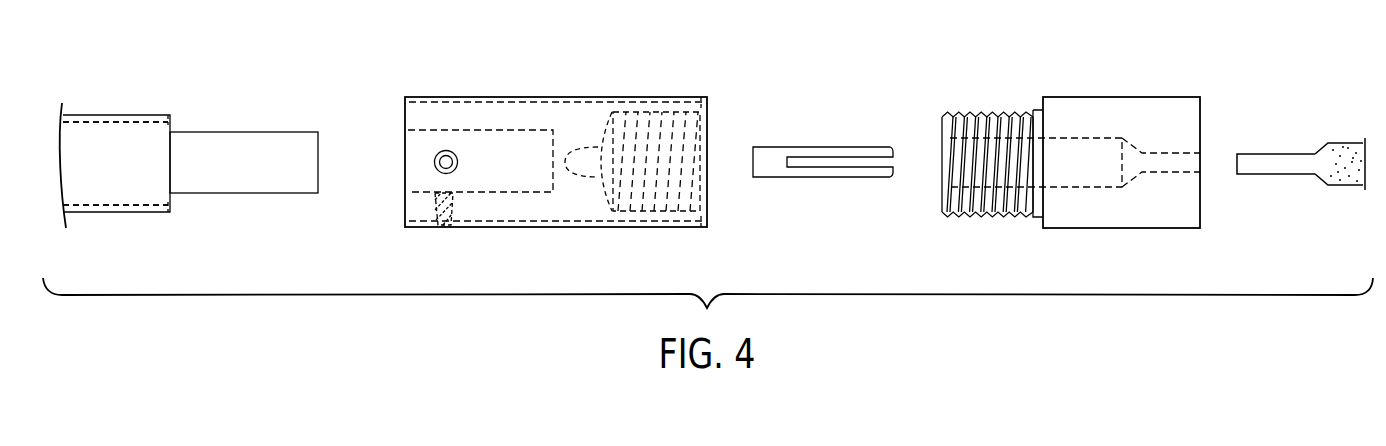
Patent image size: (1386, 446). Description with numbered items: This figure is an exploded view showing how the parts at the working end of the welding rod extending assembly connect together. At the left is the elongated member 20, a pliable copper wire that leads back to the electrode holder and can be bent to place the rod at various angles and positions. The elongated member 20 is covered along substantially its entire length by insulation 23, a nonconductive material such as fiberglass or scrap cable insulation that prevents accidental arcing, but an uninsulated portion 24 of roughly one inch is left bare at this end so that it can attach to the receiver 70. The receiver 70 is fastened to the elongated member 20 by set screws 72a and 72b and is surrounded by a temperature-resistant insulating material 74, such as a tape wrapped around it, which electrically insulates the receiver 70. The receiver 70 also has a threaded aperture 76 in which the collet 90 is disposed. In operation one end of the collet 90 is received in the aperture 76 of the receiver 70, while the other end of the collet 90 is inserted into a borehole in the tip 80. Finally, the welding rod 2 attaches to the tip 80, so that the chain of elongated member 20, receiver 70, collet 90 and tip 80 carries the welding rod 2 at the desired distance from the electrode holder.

The elongated member 20 is at (157, 98).
The insulation 23 is at (128, 207).
The uninsulated portion 24 is at (230, 195).
The receiver 70 is at (526, 146).
The set screw 72a is at (434, 162).
The set screw 72b is at (443, 228).
The insulating material 74 is at (603, 102).
The threaded aperture 76 is at (670, 113).
The tip 80 is at (1113, 90).
The collet 90 is at (835, 138).
The welding rod 2 is at (1272, 147).